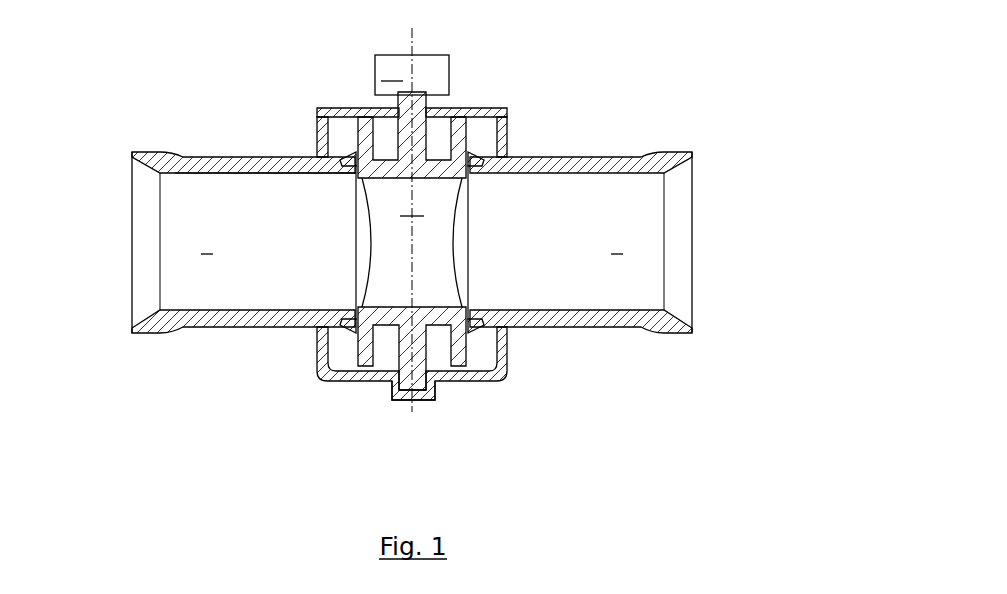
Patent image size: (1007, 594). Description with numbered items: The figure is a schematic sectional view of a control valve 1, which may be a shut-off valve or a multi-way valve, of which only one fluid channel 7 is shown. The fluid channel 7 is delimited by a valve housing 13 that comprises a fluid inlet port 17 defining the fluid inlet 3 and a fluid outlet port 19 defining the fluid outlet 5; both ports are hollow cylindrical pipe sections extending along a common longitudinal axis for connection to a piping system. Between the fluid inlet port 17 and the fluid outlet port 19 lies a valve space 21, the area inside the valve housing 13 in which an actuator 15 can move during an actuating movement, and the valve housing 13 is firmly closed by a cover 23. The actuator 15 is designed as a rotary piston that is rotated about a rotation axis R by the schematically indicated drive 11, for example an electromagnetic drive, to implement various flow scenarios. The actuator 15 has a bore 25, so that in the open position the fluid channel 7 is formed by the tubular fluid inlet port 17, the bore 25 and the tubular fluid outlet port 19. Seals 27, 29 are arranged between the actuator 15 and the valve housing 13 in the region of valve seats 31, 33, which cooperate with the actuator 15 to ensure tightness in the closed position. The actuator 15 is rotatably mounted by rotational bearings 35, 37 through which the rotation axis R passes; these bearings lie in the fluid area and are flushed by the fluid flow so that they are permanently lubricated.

The control valve 1 is at (715, 118).
The rotation axis R is at (416, 30).
The fluid inlet 3 is at (187, 241).
The fluid outlet 5 is at (637, 241).
The fluid channel 7 is at (208, 175).
The drive 11 is at (412, 75).
The valve housing 13 is at (592, 157).
The actuator 15 is at (462, 130).
The fluid inlet port 17 is at (190, 157).
The fluid outlet port 19 is at (637, 157).
The valve space 21 is at (357, 251).
The cover 23 is at (490, 115).
The bore 25 is at (412, 242).
The seal 27 is at (350, 330).
The seal 29 is at (343, 158).
The valve seat 31 is at (343, 173).
The valve seat 33 is at (480, 173).
The rotational bearing 35 is at (407, 398).
The rotational bearing 37 is at (448, 113).